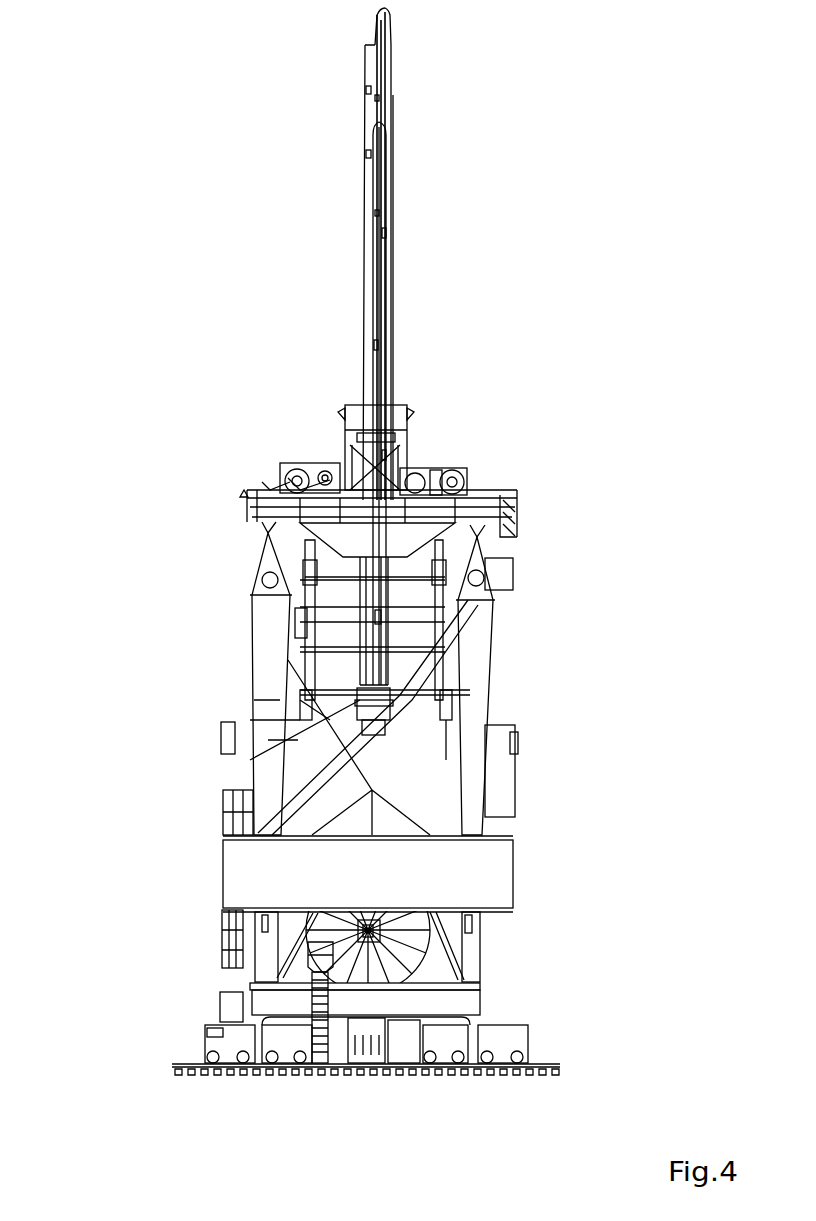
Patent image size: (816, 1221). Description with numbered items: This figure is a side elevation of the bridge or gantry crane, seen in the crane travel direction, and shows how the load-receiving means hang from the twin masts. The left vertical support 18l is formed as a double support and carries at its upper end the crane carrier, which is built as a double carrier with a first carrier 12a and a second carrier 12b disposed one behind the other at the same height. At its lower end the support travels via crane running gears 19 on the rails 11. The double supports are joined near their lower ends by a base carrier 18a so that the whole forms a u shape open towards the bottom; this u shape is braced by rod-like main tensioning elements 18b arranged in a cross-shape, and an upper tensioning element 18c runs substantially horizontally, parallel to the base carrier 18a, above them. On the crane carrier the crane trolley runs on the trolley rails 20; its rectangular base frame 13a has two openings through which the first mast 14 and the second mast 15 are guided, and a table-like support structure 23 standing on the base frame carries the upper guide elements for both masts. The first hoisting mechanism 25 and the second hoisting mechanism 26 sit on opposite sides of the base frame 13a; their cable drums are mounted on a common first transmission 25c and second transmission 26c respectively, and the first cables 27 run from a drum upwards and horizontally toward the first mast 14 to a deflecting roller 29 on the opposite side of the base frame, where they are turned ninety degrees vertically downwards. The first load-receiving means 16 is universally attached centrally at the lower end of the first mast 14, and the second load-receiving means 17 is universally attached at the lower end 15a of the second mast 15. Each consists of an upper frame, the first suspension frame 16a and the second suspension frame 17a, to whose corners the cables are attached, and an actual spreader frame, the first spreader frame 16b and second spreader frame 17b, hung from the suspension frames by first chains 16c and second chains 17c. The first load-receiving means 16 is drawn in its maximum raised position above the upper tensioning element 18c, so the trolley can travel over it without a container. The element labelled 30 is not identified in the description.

The rails 11 is at (500, 1065).
The first carrier 12a is at (270, 567).
The second carrier 12b is at (462, 597).
The base frame 13a is at (247, 495).
The first mast 14 is at (383, 66).
The second mast 15 is at (380, 195).
The lower end of the second mast 15a is at (392, 662).
The first load-receiving means 16 is at (515, 577).
The first suspension frame 16a is at (433, 565).
The first spreader frame 16b is at (412, 612).
The first chains 16c is at (330, 605).
The second load-receiving means 17 is at (435, 722).
The second suspension frame 17a is at (452, 690).
The second spreader frame 17b is at (493, 735).
The second chains 17c is at (300, 716).
The base carrier 18a is at (437, 1003).
The main tensioning elements 18b is at (338, 776).
The upper tensioning element 18c is at (330, 650).
The left vertical support 18l is at (268, 633).
The crane running gears 19 is at (475, 1035).
The trolley rails 20 is at (247, 513).
The support structure 23 is at (400, 437).
The first hoisting mechanism 25 is at (462, 482).
The first transmission 25c is at (455, 470).
The second hoisting mechanism 26 is at (257, 490).
The second transmission 26c is at (295, 472).
The first cables 27 is at (338, 475).
The deflecting roller 29 is at (300, 462).
The housing box 30 is at (455, 873).